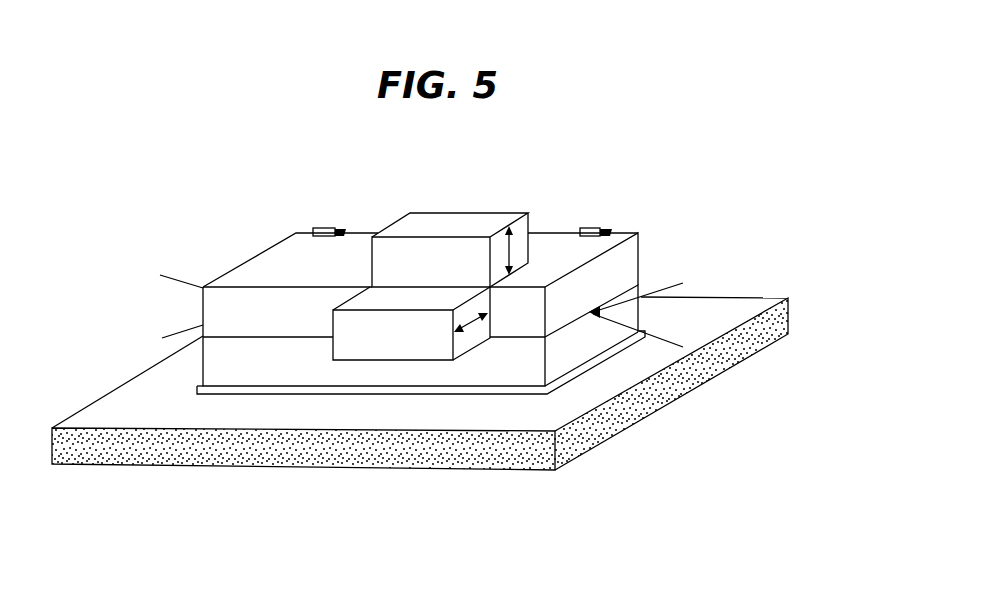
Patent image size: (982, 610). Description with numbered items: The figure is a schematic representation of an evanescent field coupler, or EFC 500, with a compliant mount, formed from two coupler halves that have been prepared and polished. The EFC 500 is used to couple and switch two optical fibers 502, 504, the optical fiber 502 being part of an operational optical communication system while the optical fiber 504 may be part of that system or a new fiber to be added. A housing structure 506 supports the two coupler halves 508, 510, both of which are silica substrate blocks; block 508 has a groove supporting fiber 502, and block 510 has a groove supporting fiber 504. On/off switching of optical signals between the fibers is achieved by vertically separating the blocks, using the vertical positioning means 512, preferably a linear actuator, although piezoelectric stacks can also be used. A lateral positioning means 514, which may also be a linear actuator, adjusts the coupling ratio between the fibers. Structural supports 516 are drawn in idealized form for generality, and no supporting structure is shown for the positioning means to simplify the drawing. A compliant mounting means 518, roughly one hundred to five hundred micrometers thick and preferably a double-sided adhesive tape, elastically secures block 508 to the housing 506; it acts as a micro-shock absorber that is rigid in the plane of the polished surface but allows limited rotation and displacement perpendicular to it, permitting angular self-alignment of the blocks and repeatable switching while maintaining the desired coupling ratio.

The EFC 500 is at (452, 180).
The optical fiber 502 is at (180, 335).
The optical fiber 504 is at (195, 288).
The housing structure 506 is at (125, 467).
The coupler half 508 is at (252, 378).
The coupler half 510 is at (406, 279).
The vertical positioning means 512 is at (445, 277).
The lateral positioning means 514 is at (410, 353).
The structural supports 516 is at (323, 227).
The compliant mounting means 518 is at (605, 363).